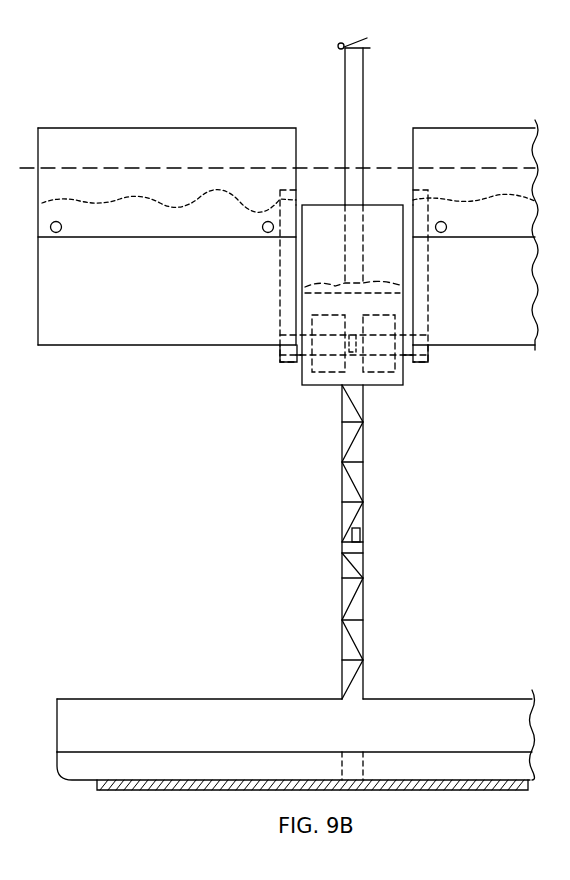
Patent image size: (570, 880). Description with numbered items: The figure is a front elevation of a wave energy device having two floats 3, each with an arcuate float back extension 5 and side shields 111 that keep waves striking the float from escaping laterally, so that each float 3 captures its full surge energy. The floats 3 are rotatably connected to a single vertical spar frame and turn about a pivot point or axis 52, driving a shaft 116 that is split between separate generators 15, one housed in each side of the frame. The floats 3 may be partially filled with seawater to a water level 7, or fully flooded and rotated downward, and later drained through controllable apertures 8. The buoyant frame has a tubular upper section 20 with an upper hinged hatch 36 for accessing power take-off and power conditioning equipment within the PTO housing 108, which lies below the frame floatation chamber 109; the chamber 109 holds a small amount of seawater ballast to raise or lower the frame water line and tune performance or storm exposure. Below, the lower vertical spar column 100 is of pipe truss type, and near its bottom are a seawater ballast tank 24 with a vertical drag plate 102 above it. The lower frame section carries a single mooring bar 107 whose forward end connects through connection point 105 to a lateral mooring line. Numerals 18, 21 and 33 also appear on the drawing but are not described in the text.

The float 3 is at (167, 153).
The arcuate float back extension 5 is at (165, 338).
The water level 7 is at (200, 204).
The controllable apertures 8 is at (63, 227).
The generator 15 is at (321, 373).
The water line 18 is at (316, 167).
The tubular upper section 20 is at (366, 90).
The ground 21 is at (97, 785).
The seawater ballast tank 24 is at (191, 778).
The base housing 33 is at (90, 750).
The upper hinged hatch 36 is at (360, 40).
The pivot point or axis 52 is at (283, 346).
The lower vertical spar column 100 is at (340, 596).
The vertical drag plate 102 is at (175, 710).
The connection point 105 is at (362, 534).
The mooring bar 107 is at (366, 549).
The PTO housing 108 is at (330, 306).
The frame floatation chamber 109 is at (340, 248).
The side shields 111 is at (40, 276).
The shaft 116 is at (298, 364).